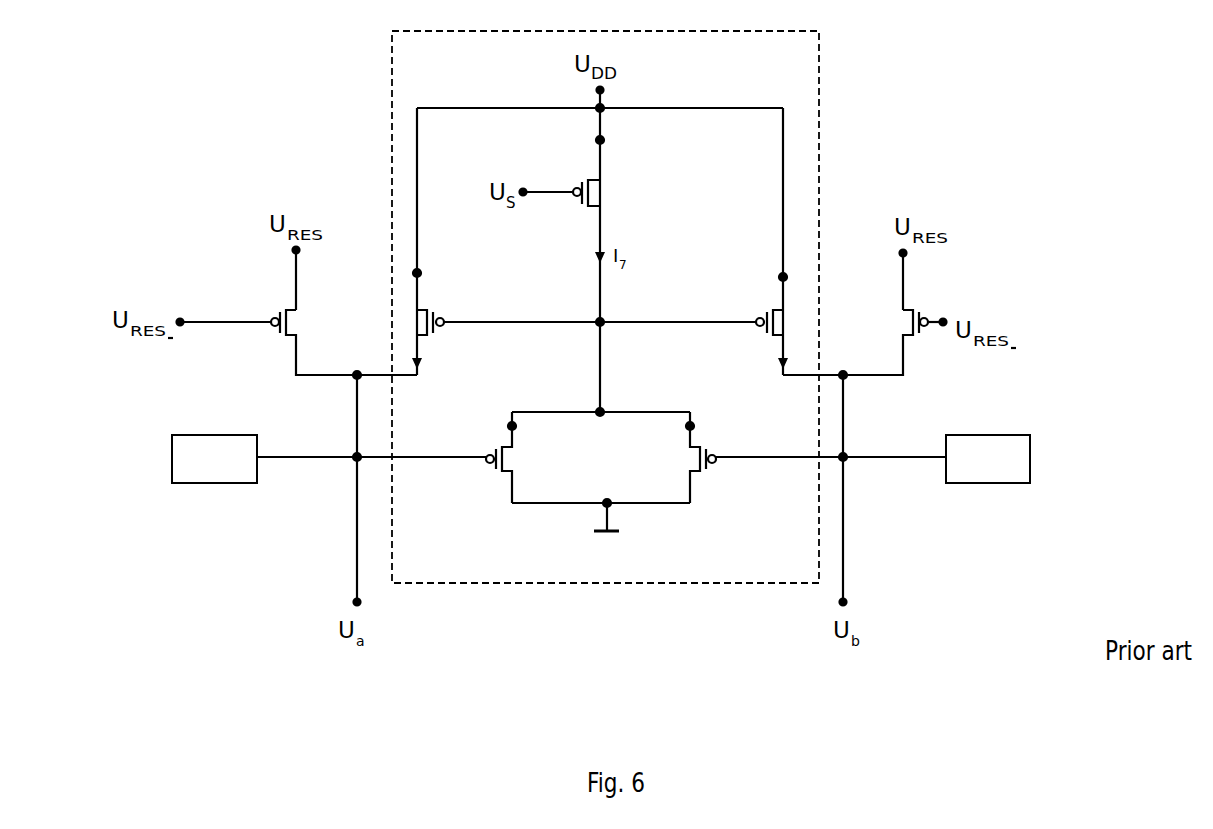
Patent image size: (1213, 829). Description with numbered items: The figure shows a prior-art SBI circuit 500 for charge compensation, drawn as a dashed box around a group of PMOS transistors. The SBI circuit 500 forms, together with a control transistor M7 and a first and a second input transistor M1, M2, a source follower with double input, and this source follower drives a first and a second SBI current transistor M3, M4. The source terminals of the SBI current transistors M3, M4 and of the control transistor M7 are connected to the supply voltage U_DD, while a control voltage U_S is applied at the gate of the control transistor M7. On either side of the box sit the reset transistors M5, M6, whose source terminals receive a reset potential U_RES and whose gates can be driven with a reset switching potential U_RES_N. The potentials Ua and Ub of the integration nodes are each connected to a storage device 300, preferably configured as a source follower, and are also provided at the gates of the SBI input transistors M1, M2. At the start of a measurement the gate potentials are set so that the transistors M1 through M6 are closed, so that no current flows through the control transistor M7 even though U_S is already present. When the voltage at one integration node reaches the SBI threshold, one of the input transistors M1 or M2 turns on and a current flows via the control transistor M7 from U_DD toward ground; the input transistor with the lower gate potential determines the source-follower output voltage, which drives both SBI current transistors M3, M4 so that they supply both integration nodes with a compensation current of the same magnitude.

The SBI circuit 500 is at (826, 88).
The storage device 300 is at (601, 459).
The first input transistor M1 is at (513, 457).
The second input transistor M2 is at (688, 457).
The first SBI current transistor M3 is at (498, 322).
The second SBI current transistor M4 is at (709, 322).
The reset transistor M5 is at (297, 342).
The reset transistor M6 is at (865, 342).
The control transistor M7 is at (583, 193).